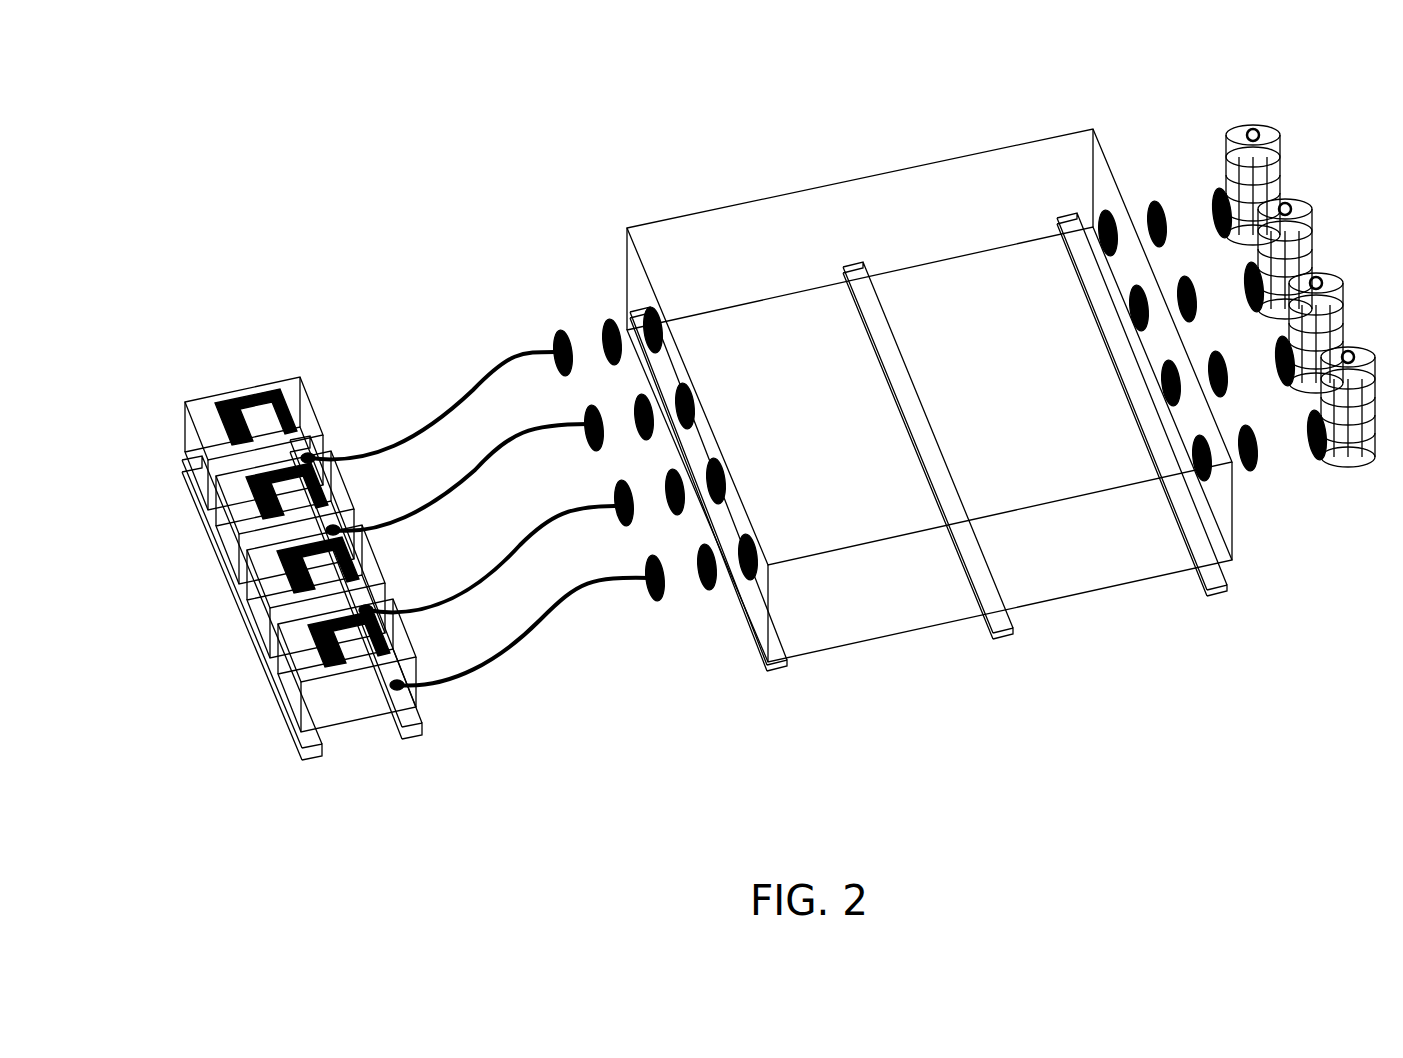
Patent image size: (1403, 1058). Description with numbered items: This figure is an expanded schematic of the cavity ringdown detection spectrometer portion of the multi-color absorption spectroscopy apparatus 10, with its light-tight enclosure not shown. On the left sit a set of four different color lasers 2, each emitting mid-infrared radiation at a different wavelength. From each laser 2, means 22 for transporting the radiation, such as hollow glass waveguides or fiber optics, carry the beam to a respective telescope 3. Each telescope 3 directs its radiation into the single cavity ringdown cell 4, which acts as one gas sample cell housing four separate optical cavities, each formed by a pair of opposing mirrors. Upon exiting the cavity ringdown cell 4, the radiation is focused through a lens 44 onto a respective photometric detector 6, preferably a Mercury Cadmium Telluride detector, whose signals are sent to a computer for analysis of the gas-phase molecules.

The multi-color absorption spectroscopy apparatus 10 is at (338, 145).
The laser 2 is at (228, 672).
The means for transporting the radiation 22 is at (537, 675).
The telescope 3 is at (577, 320).
The cavity ringdown cell 4 is at (1015, 665).
The lens 44 is at (1277, 502).
The photometric detector 6 is at (1203, 130).